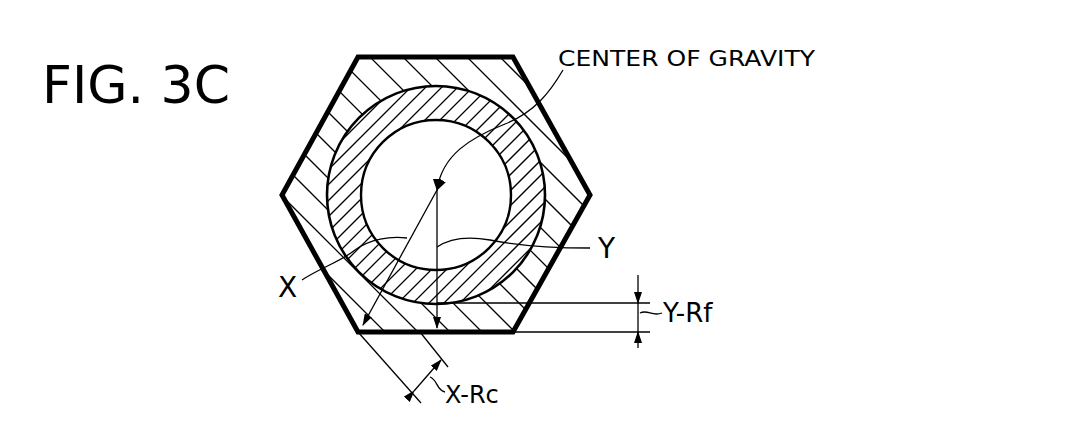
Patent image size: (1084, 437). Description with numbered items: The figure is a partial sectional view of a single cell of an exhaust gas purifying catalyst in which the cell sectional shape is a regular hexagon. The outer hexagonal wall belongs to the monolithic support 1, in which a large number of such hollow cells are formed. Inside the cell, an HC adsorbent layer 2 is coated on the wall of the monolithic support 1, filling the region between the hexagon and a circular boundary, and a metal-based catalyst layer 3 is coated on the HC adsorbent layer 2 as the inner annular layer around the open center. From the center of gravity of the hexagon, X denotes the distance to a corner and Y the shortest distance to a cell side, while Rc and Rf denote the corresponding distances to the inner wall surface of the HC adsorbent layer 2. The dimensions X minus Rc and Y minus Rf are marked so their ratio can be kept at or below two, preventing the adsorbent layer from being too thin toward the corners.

The monolithic support 1 is at (553, 122).
The HC adsorbent layer 2 is at (320, 122).
The metal-based catalyst layer 3 is at (525, 192).